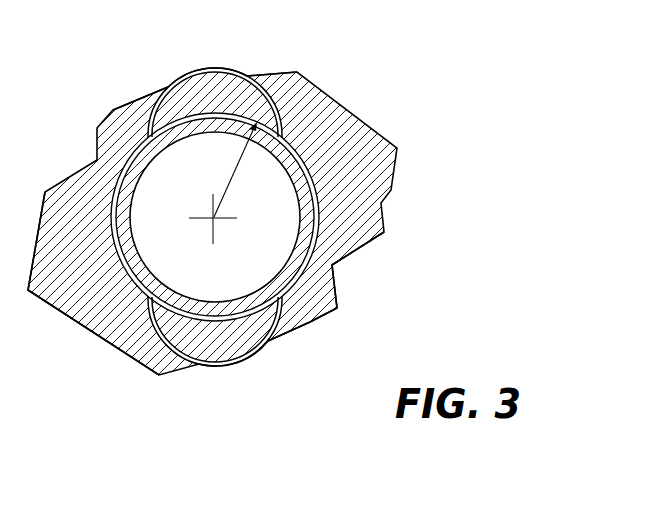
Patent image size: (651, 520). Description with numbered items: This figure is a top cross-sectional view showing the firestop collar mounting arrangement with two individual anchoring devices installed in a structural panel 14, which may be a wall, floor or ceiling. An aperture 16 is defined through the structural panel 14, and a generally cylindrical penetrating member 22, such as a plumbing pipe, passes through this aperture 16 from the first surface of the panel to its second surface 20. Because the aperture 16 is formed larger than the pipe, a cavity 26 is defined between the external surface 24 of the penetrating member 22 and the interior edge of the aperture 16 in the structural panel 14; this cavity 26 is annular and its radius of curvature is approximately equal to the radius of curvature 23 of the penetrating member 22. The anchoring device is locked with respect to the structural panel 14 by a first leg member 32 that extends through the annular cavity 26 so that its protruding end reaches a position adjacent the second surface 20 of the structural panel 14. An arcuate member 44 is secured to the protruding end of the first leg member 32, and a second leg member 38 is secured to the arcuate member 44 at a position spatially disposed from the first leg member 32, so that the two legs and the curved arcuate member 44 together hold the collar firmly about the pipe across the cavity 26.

The structural panel 14 is at (367, 180).
The aperture 16 is at (310, 268).
The second surface 20 is at (70, 298).
The penetrating member 22 is at (292, 162).
The radius of curvature 23 is at (240, 160).
The external surface 24 is at (320, 228).
The cavity 26 is at (298, 292).
The first leg member 32 is at (148, 137).
The second leg member 38 is at (285, 136).
The arcuate member 44 is at (218, 67).